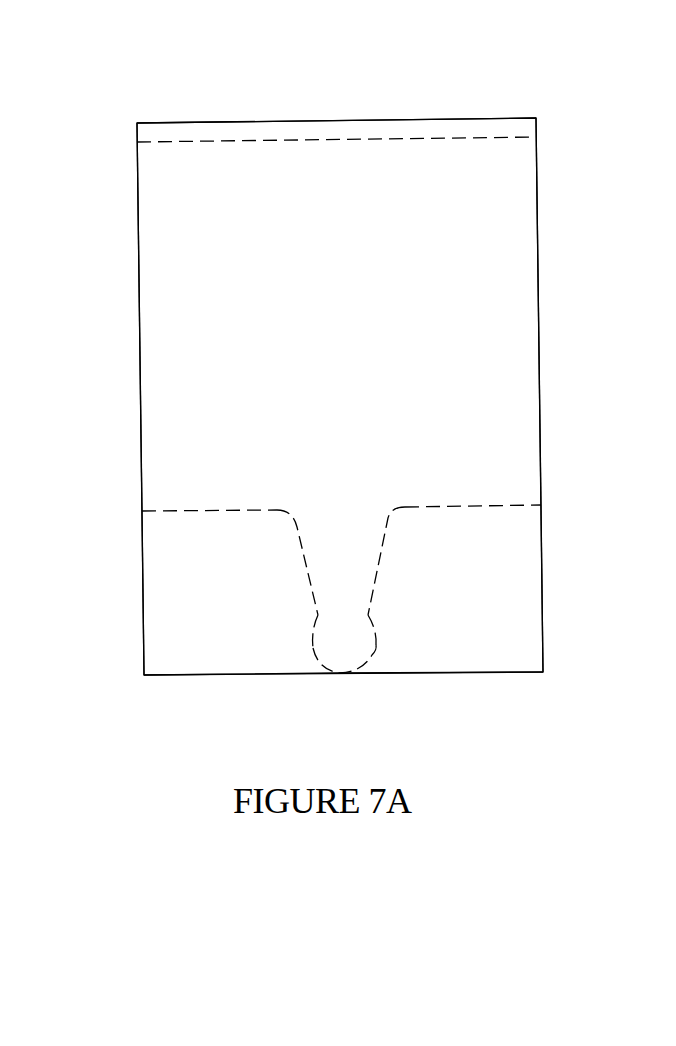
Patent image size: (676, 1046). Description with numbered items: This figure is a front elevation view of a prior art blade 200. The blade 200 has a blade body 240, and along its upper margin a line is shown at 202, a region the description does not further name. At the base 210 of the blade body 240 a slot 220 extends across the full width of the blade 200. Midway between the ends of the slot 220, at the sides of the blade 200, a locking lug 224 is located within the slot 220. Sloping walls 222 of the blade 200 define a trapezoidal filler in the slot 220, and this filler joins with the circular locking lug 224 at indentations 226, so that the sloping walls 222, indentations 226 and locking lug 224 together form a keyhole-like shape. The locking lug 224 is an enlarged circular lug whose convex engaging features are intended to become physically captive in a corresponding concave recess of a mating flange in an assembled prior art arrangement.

The prior art blade 200 is at (243, 118).
The top seal edge 202 is at (453, 118).
The base 210 is at (467, 673).
The slot 220 is at (145, 573).
The sloping walls 222 is at (305, 554).
The locking lug 224 is at (312, 644).
The indentations 226 is at (318, 615).
The blade body 240 is at (539, 341).